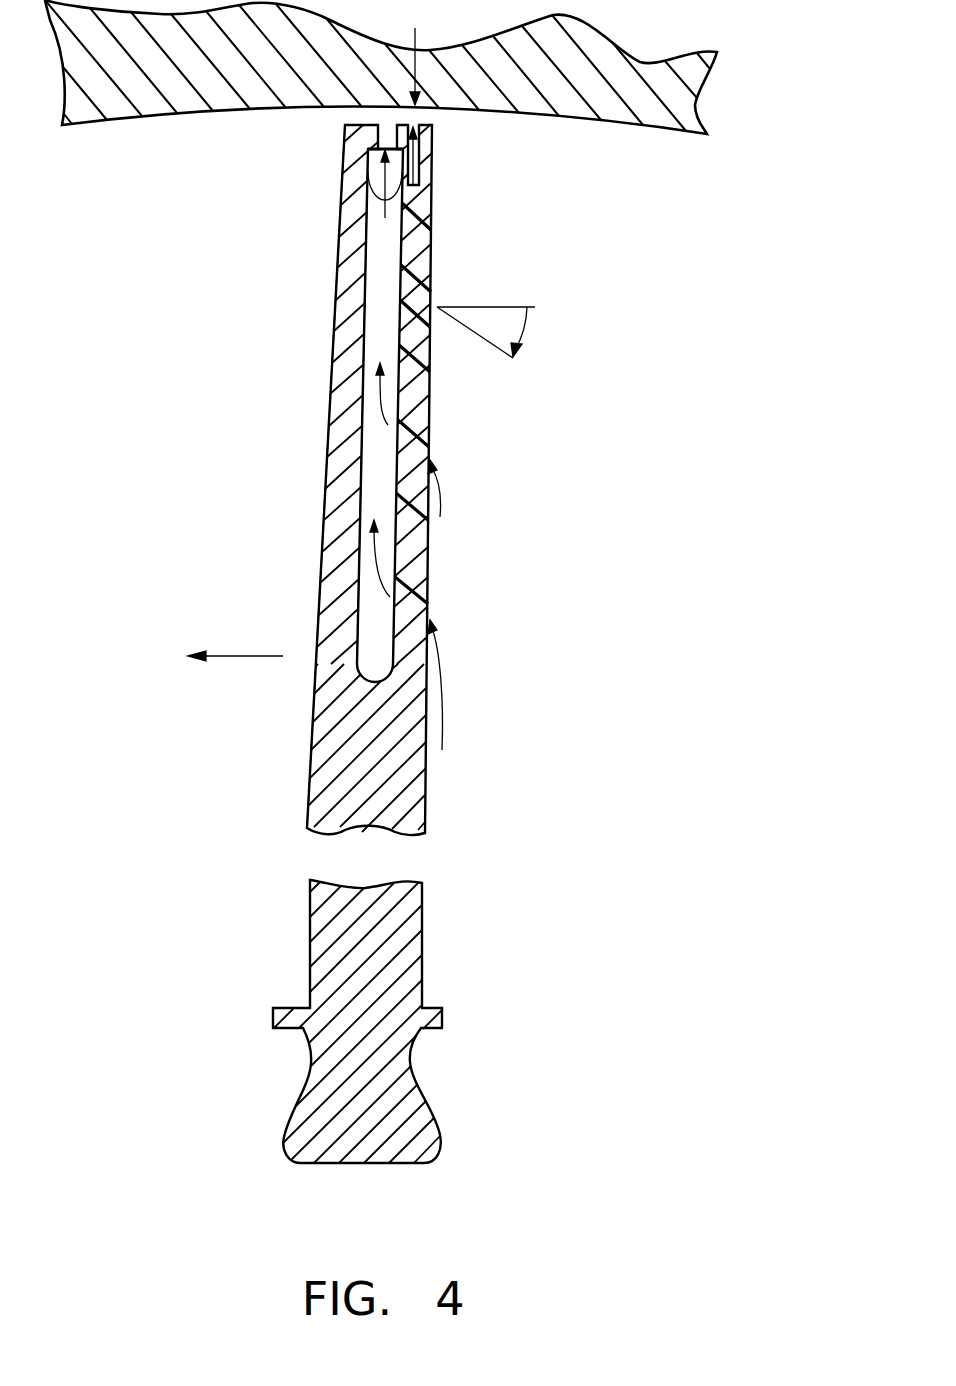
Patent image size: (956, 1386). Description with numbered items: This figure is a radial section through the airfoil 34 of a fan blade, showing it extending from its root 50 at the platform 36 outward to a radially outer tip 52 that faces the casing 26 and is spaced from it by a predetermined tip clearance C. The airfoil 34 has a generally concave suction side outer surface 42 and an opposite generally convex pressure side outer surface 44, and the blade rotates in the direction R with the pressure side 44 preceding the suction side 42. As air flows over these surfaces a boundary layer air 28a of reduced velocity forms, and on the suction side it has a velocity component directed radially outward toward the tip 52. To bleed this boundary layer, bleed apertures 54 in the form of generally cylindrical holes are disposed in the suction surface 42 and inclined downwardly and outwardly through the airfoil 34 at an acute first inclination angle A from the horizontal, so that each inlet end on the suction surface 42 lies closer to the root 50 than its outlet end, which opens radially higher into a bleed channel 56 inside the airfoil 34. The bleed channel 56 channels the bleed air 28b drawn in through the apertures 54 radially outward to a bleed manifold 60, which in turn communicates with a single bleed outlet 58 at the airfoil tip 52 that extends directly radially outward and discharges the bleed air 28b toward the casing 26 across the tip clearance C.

The casing 26 is at (166, 113).
The tip clearance C is at (420, 35).
The suction side outer surface 42 is at (431, 409).
The bleed outlet 58 is at (382, 120).
The bleed manifold 60 is at (368, 178).
The airfoil tip 52 is at (427, 124).
The bleed apertures 54 is at (424, 222).
The bleed channel 56 is at (365, 318).
The pressure side outer surface 44 is at (323, 530).
The bleed air 28b is at (387, 423).
The boundary layer air 28a is at (445, 695).
The first inclination angle A is at (528, 317).
The direction of rotation R is at (238, 653).
The airfoil 34 is at (309, 940).
The root 50 is at (423, 1006).
The platform 36 is at (443, 1020).